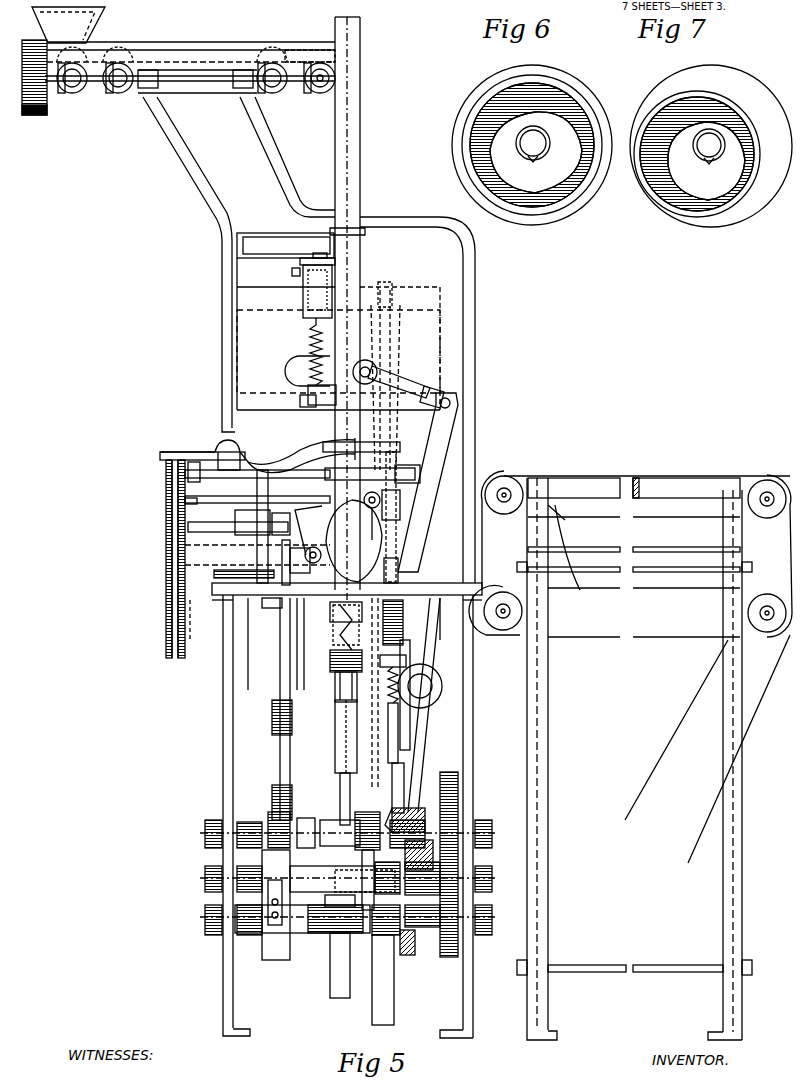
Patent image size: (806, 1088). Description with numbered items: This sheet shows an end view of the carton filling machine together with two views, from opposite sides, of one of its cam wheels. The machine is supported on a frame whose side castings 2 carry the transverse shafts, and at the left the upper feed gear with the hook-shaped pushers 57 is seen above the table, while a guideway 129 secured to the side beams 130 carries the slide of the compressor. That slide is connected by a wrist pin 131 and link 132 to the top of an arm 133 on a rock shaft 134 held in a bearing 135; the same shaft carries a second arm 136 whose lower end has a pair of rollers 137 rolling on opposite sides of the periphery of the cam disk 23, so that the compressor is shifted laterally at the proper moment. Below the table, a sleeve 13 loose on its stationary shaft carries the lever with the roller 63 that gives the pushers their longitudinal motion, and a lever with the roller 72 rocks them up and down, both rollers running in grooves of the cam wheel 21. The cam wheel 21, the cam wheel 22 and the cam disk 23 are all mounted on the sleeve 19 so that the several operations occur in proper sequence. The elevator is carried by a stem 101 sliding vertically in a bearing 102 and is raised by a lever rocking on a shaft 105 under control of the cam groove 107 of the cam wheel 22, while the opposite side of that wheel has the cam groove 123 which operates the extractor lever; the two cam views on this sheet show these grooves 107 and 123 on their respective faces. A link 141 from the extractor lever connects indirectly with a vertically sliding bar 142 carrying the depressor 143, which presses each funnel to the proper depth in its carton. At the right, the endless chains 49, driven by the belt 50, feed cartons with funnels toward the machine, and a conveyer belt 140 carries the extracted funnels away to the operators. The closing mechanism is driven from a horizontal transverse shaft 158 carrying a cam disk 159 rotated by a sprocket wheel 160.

In FIG. 5, the side castings 2 is at (222, 740).
In FIG. 5, the sleeve 13 is at (328, 833).
In FIG. 5, the sleeve 19 is at (342, 881).
In FIG. 5, the cam wheel 21 is at (276, 905).
In FIG. 5, the cam wheel 22 is at (367, 861).
In FIG. 6, the cam wheel 22 is at (532, 145).
In FIG. 7, the cam wheel 22 is at (711, 146).
In FIG. 5, the cam disk 23 is at (445, 940).
In FIG. 5, the endless chains 49 is at (704, 472).
In FIG. 5, the belt 50 is at (690, 705).
In FIG. 5, the hook-shaped pushers 57 is at (338, 537).
In FIG. 5, the roller 63 is at (291, 826).
In FIG. 5, the roller 72 is at (268, 820).
In FIG. 5, the stem 101 is at (350, 800).
In FIG. 5, the bearing 102 is at (335, 728).
In FIG. 5, the shaft 105 is at (262, 930).
In FIG. 6, the cam groove 107 is at (549, 208).
In FIG. 7, the cam groove 123 is at (712, 220).
In FIG. 5, the guideway 129 is at (299, 332).
In FIG. 5, the side beams 130 is at (222, 345).
In FIG. 5, the wrist pin 131 is at (367, 360).
In FIG. 5, the link 132 is at (408, 388).
In FIG. 5, the arm 133 is at (428, 482).
In FIG. 5, the rock shaft 134 is at (442, 686).
In FIG. 5, the bearing 135 is at (446, 628).
In FIG. 5, the arm 136 is at (418, 758).
In FIG. 5, the rollers 137 is at (413, 808).
In FIG. 5, the conveyer belt 140 is at (630, 755).
In FIG. 5, the link 141 is at (412, 714).
In FIG. 5, the vertically sliding bar 142 is at (412, 476).
In FIG. 5, the depressor 143 is at (395, 447).
In FIG. 5, the horizontal transverse shaft 158 is at (192, 559).
In FIG. 5, the cam disk 159 is at (172, 510).
In FIG. 5, the sprocket wheel 160 is at (282, 580).